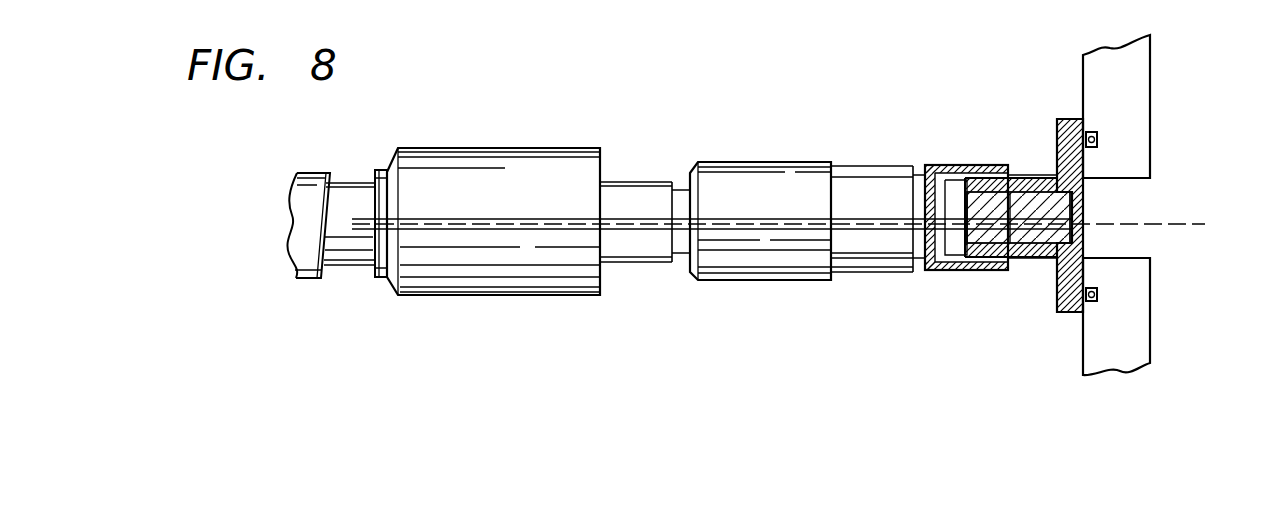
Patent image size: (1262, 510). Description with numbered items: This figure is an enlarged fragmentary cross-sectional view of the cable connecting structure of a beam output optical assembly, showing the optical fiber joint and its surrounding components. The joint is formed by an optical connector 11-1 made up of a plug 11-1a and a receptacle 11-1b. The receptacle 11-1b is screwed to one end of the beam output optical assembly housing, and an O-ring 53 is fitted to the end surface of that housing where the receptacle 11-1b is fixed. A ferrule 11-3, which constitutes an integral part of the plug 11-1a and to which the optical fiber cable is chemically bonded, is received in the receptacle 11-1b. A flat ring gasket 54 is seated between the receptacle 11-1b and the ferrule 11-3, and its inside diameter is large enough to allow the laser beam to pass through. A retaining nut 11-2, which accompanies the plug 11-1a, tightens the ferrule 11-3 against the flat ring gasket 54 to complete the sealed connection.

The optical connector 11-1 is at (473, 160).
The plug 11-1a is at (767, 162).
The receptacle 11-1b is at (1057, 148).
The retaining nut 11-2 is at (979, 271).
The ferrule 11-3 is at (940, 272).
The O-ring 53 is at (1097, 139).
The flat ring gasket 54 is at (1048, 259).